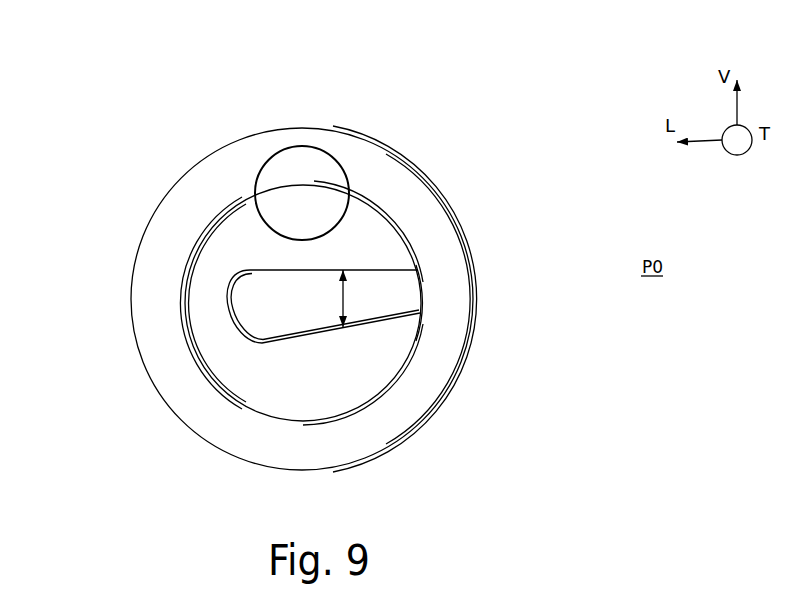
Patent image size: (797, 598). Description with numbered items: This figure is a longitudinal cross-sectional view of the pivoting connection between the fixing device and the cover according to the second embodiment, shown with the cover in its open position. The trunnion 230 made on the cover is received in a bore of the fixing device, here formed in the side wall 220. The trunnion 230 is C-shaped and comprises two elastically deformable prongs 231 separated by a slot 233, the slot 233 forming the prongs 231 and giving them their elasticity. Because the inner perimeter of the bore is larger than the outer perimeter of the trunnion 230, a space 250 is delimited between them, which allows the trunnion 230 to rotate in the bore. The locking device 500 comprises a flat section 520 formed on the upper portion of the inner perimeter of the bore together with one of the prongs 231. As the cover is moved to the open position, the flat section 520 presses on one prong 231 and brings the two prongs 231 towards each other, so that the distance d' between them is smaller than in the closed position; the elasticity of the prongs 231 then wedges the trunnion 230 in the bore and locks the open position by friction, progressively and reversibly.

The outer tube 220 is at (183, 177).
The space 250 is at (178, 288).
The trunnion 230 is at (210, 340).
The prong 231 is at (390, 237).
The slot 233 is at (413, 302).
The locking device 500 is at (326, 139).
The flat section 520 is at (300, 188).
The distance d' is at (441, 285).